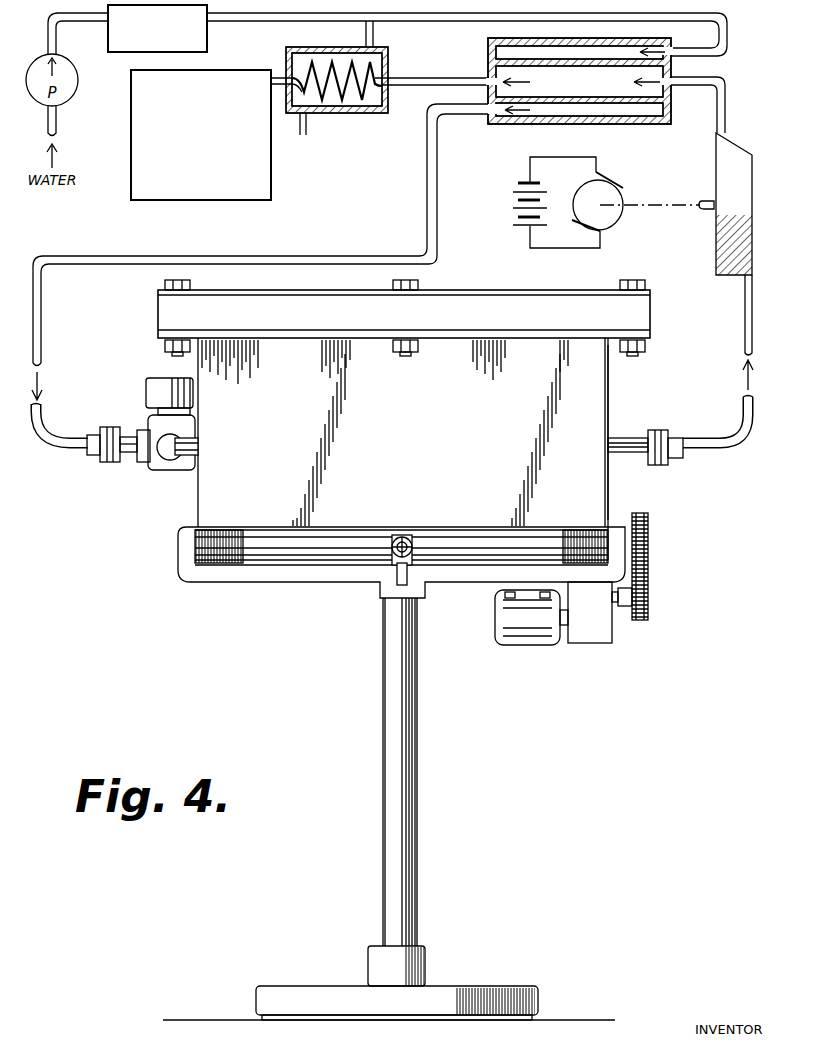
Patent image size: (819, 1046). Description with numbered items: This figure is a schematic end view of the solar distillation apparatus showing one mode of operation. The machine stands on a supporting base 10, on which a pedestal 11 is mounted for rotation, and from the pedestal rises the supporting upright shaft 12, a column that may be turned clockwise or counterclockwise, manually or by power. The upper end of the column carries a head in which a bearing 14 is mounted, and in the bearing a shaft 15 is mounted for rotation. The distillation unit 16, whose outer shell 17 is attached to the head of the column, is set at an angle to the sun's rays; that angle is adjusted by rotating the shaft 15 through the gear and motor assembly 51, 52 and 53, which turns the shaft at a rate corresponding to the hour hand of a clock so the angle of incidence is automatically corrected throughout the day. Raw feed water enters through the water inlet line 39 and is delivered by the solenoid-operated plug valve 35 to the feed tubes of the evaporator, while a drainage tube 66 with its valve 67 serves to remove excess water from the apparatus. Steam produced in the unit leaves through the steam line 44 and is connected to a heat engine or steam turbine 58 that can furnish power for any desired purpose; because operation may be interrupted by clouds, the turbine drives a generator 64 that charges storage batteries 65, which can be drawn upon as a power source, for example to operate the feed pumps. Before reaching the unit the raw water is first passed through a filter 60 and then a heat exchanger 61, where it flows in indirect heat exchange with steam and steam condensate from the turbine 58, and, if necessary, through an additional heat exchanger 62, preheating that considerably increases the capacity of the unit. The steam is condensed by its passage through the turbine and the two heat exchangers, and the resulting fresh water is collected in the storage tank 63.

The supporting base 10 is at (350, 1020).
The pedestal 11 is at (312, 986).
The supporting upright shaft 12 is at (418, 767).
The bearing 14 is at (409, 552).
The shaft 15 is at (310, 553).
The distillation unit 16 is at (411, 431).
The outer shell 17 is at (611, 404).
The solenoid-operated plug valve 35 is at (170, 470).
The water inlet line 39 is at (33, 428).
The steam line 44 is at (745, 303).
The gear 51 is at (650, 544).
The gear 52 is at (648, 598).
The motor 53 is at (530, 648).
The steam turbine 58 is at (753, 187).
The filter 60 is at (123, 47).
The heat exchanger 61 is at (488, 47).
The additional heat exchanger 62 is at (334, 114).
The storage tank 63 is at (221, 193).
The generator 64 is at (614, 193).
The storage batteries 65 is at (512, 195).
The drainage tube 66 is at (393, 582).
The valve 67 is at (397, 538).